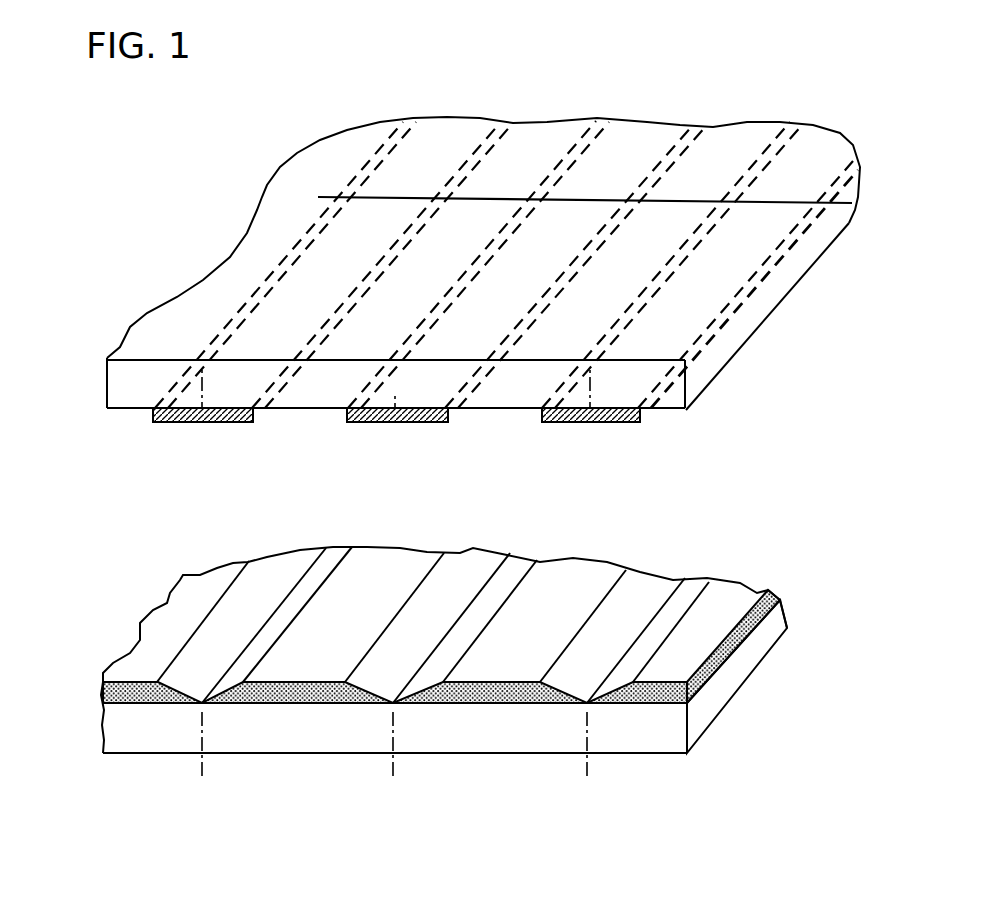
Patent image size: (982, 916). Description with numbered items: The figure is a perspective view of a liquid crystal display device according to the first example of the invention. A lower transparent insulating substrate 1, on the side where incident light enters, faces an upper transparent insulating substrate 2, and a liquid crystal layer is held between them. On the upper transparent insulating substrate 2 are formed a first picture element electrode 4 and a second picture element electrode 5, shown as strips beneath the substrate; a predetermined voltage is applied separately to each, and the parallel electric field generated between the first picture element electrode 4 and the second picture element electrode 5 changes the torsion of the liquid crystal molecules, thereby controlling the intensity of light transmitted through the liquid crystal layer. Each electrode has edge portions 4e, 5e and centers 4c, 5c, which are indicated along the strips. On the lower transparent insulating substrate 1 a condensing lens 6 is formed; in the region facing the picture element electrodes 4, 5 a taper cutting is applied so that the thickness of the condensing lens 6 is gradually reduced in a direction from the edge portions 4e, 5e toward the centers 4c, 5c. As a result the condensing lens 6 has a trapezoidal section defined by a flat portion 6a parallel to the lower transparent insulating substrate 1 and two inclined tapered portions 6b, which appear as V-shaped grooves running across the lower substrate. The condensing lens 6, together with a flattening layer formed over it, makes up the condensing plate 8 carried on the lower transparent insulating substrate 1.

The lower transparent insulating substrate 1 is at (355, 360).
The upper transparent insulating substrate 2 is at (763, 310).
The first picture element electrode 4 is at (230, 408).
The edge portion of the first picture element electrode 4e is at (156, 419).
The center of the first picture element electrode 4c is at (178, 423).
The second picture element electrode 5 is at (413, 409).
The edge portion of the second picture element electrode 5e is at (347, 415).
The center of the second picture element electrode 5c is at (392, 413).
The condensing lens 6 is at (441, 697).
The flat portion 6a is at (273, 704).
The tapered portions 6b is at (234, 704).
The condensing plate 8 is at (87, 574).